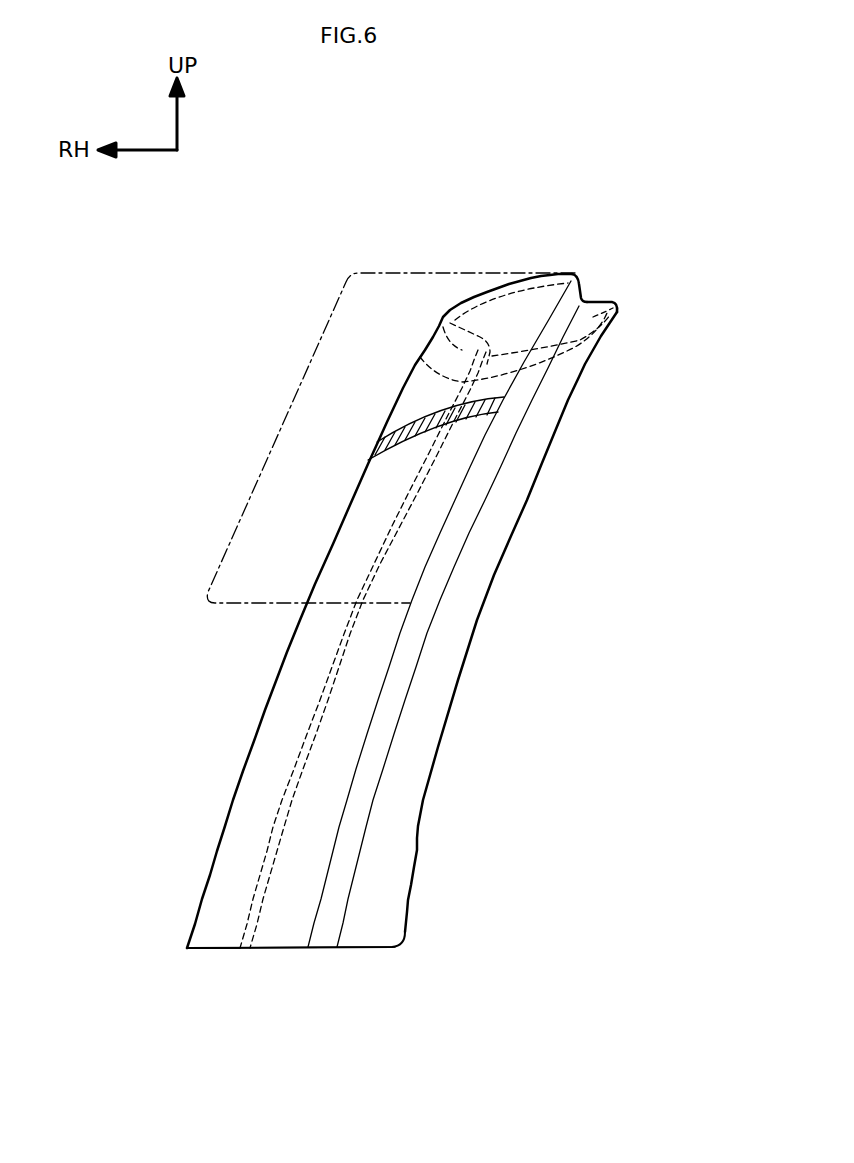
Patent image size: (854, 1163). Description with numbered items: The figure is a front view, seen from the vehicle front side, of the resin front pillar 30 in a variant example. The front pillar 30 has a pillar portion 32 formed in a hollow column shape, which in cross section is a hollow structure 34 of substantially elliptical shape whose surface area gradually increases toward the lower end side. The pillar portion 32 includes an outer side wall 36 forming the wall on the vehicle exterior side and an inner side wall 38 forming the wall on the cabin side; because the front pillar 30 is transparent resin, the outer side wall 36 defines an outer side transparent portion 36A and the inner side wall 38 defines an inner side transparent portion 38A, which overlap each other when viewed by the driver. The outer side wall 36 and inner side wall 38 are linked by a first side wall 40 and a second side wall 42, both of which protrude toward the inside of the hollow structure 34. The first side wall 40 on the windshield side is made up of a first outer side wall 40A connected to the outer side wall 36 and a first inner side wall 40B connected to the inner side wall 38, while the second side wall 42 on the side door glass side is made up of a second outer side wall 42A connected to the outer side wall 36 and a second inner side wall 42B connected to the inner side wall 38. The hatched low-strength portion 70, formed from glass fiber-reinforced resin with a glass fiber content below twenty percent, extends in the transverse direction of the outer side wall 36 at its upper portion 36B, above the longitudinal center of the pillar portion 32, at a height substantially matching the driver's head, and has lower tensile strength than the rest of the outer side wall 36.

The front pillar 30 is at (124, 615).
The pillar portion 32 is at (237, 788).
The hollow structure 34 is at (513, 315).
The outer side wall 36 is at (283, 688).
The outer side transparent portion 36A is at (230, 857).
The upper portion of the outer side wall 36B is at (285, 420).
The inner side wall 38 is at (540, 428).
The inner side transparent portion 38A is at (510, 493).
The first side wall 40 is at (708, 206).
The first outer side wall 40A is at (567, 305).
The first inner side wall 40B is at (593, 317).
The second side wall 42 is at (333, 190).
The second outer side wall 42A is at (433, 350).
The second inner side wall 42B is at (420, 355).
The low-strength portion 70 is at (388, 430).